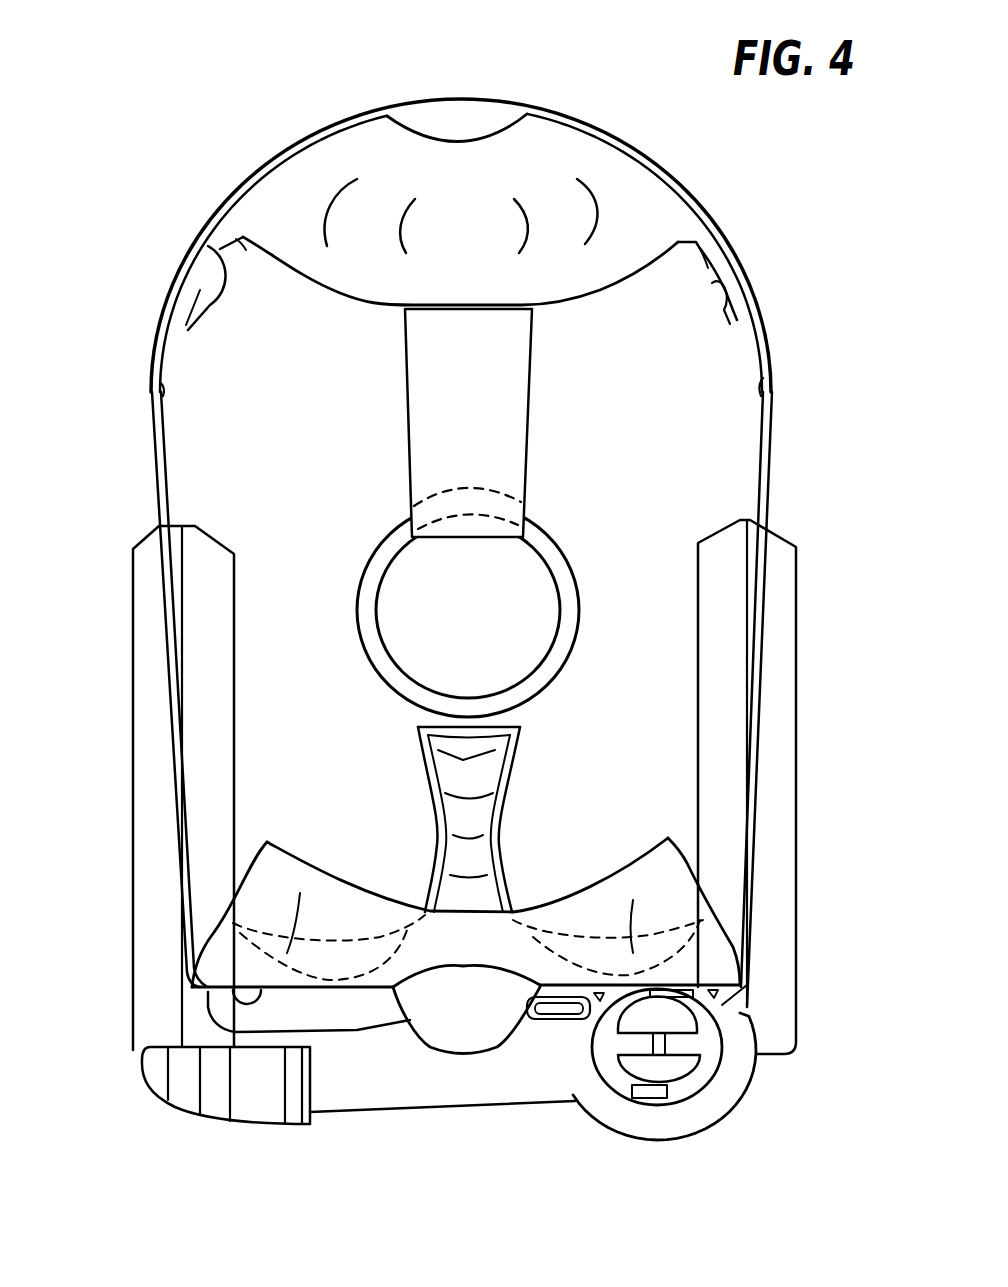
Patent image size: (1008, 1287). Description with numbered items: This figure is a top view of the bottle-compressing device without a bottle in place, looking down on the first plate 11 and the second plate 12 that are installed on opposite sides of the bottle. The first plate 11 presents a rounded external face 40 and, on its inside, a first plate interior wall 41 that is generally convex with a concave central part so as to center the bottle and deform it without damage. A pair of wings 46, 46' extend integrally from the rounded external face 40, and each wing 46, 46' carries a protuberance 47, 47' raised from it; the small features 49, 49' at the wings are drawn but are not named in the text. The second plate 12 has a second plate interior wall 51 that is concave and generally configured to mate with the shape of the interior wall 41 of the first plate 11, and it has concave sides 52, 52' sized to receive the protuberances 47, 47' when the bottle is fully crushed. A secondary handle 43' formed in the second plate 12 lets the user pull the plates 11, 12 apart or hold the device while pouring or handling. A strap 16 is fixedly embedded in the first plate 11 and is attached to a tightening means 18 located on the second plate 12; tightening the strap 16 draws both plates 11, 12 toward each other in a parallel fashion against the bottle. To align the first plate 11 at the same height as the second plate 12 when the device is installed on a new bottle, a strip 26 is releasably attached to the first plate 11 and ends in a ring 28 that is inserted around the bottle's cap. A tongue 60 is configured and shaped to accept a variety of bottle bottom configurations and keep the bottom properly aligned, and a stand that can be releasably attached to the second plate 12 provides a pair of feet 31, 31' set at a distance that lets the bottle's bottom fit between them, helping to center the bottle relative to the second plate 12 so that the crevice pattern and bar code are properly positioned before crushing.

The first plate 11 is at (365, 96).
The rounded external face 40 is at (692, 197).
The first plate interior wall 41 is at (612, 288).
The protuberance 47 is at (165, 278).
The protuberance 47' is at (760, 283).
The hook tip 49 is at (263, 279).
The hook tip 49' is at (680, 301).
The wing 46 is at (207, 400).
The wing 46' is at (721, 390).
The strap 16 is at (156, 449).
The foot 31 is at (128, 788).
The foot 31' is at (805, 787).
The ring 28 is at (395, 668).
The strip 26 is at (482, 432).
The tongue 60 is at (493, 775).
The second plate interior wall 51 is at (567, 897).
The concave side 52 is at (240, 914).
The concave side 52' is at (706, 911).
The secondary handle 43' is at (466, 1009).
The second plate 12 is at (358, 990).
The tightening means 18 is at (740, 1103).